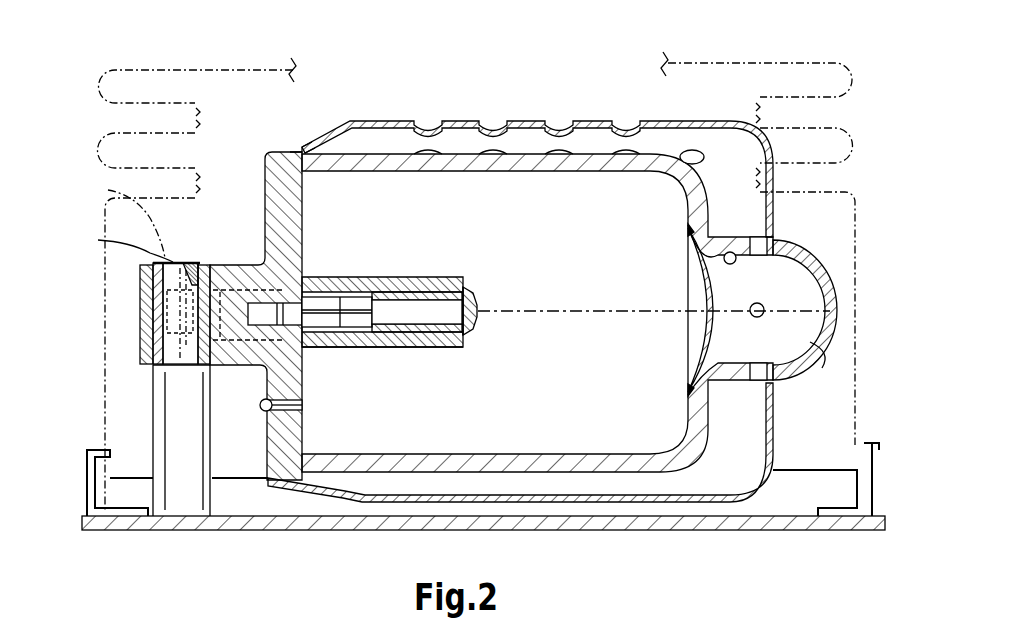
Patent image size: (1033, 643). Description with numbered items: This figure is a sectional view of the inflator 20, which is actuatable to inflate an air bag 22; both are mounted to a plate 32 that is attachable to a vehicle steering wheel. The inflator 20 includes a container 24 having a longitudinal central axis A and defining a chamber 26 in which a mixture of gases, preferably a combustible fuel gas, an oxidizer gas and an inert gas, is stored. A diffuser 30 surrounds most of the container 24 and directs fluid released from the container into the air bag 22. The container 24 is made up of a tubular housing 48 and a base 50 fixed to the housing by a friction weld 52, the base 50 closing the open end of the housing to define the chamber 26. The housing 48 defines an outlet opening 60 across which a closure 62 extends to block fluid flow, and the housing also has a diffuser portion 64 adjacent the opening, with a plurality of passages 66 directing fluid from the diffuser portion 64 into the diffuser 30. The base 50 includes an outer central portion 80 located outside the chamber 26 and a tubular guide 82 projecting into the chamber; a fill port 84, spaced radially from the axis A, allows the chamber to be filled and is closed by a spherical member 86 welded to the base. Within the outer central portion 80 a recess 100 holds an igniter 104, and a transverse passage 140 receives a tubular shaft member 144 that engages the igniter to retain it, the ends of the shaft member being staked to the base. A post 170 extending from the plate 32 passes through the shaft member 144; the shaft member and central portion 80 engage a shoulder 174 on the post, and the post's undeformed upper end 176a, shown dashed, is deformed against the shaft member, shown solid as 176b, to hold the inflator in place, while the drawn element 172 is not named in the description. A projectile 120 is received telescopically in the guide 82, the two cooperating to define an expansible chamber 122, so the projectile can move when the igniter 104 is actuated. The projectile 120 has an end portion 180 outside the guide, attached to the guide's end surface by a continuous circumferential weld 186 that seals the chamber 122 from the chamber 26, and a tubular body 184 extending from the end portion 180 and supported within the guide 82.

The inflator 20 is at (586, 140).
The air bag 22 is at (725, 62).
The container 24 is at (300, 149).
The chamber 26 is at (585, 240).
The diffuser 30 is at (387, 127).
The plate 32 is at (720, 522).
The tubular housing 48 is at (463, 160).
The base 50 is at (278, 170).
The friction weld 52 is at (313, 145).
The outlet opening 60 is at (731, 252).
The closure 62 is at (713, 283).
The diffuser portion 64 is at (778, 245).
The passages 66 is at (760, 240).
The outer central portion 80 is at (140, 268).
The tubular guide 82 is at (410, 285).
The fill port 84 is at (303, 405).
The spherical member 86 is at (261, 410).
The recess 100 is at (168, 256).
The igniter 104 is at (203, 260).
The projectile 120 is at (478, 292).
The expansible chamber 122 is at (390, 320).
The passage 140 is at (212, 263).
The shaft member 144 is at (158, 366).
The post 170 is at (172, 460).
The cylinder 172 is at (178, 340).
The shoulder 174 is at (140, 352).
The undeformed upper end 176a is at (111, 216).
The deformed end 176b is at (105, 245).
The end portion 180 is at (478, 322).
The tubular body 184 is at (420, 348).
The continuous circumferential weld 186 is at (470, 290).
The longitudinal central axis A is at (566, 313).